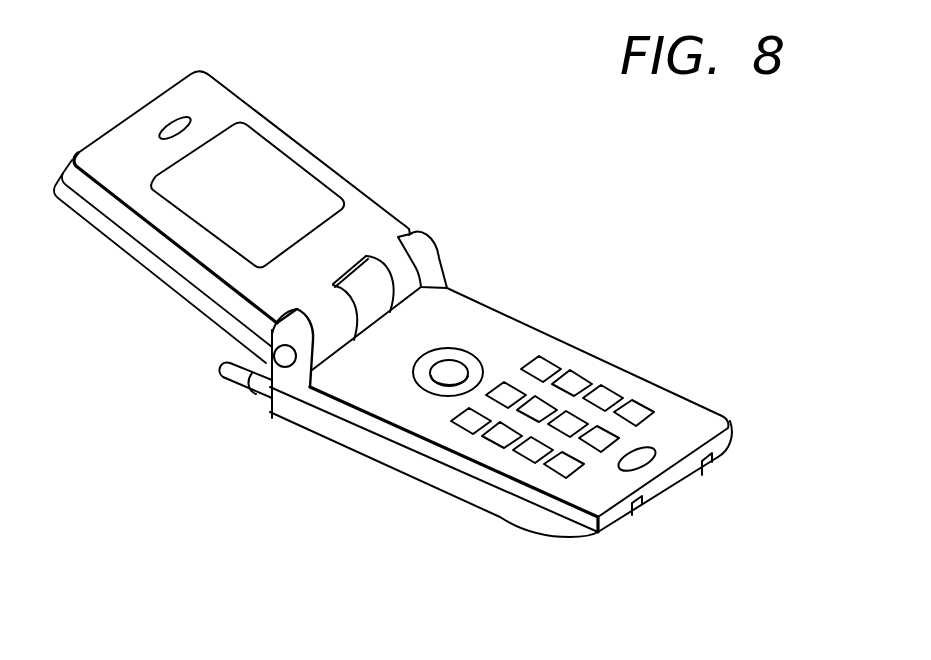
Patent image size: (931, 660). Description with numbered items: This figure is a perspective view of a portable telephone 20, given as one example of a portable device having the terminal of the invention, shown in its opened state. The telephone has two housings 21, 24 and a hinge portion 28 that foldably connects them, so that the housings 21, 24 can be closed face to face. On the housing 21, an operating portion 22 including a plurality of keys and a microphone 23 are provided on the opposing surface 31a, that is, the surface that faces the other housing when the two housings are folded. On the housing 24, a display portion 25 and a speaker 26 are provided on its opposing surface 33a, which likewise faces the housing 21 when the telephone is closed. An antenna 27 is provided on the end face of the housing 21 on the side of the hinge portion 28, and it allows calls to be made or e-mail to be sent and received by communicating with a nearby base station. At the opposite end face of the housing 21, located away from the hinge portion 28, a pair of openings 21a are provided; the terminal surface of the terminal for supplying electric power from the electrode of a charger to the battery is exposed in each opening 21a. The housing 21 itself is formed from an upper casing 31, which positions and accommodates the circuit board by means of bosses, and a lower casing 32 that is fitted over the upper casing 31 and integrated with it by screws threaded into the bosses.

The portable telephone 20 is at (452, 194).
The housing 21 is at (243, 488).
The openings 21a is at (703, 472).
The operating portion 22 is at (472, 303).
The microphone 23 is at (645, 448).
The housing 24 is at (171, 246).
The display portion 25 is at (260, 160).
The speaker 26 is at (183, 122).
The antenna 27 is at (228, 373).
The hinge portion 28 is at (284, 356).
The upper casing 31 is at (380, 428).
The opposing surface 31a is at (576, 488).
The lower casing 32 is at (450, 483).
The opposing surface 33a is at (336, 183).